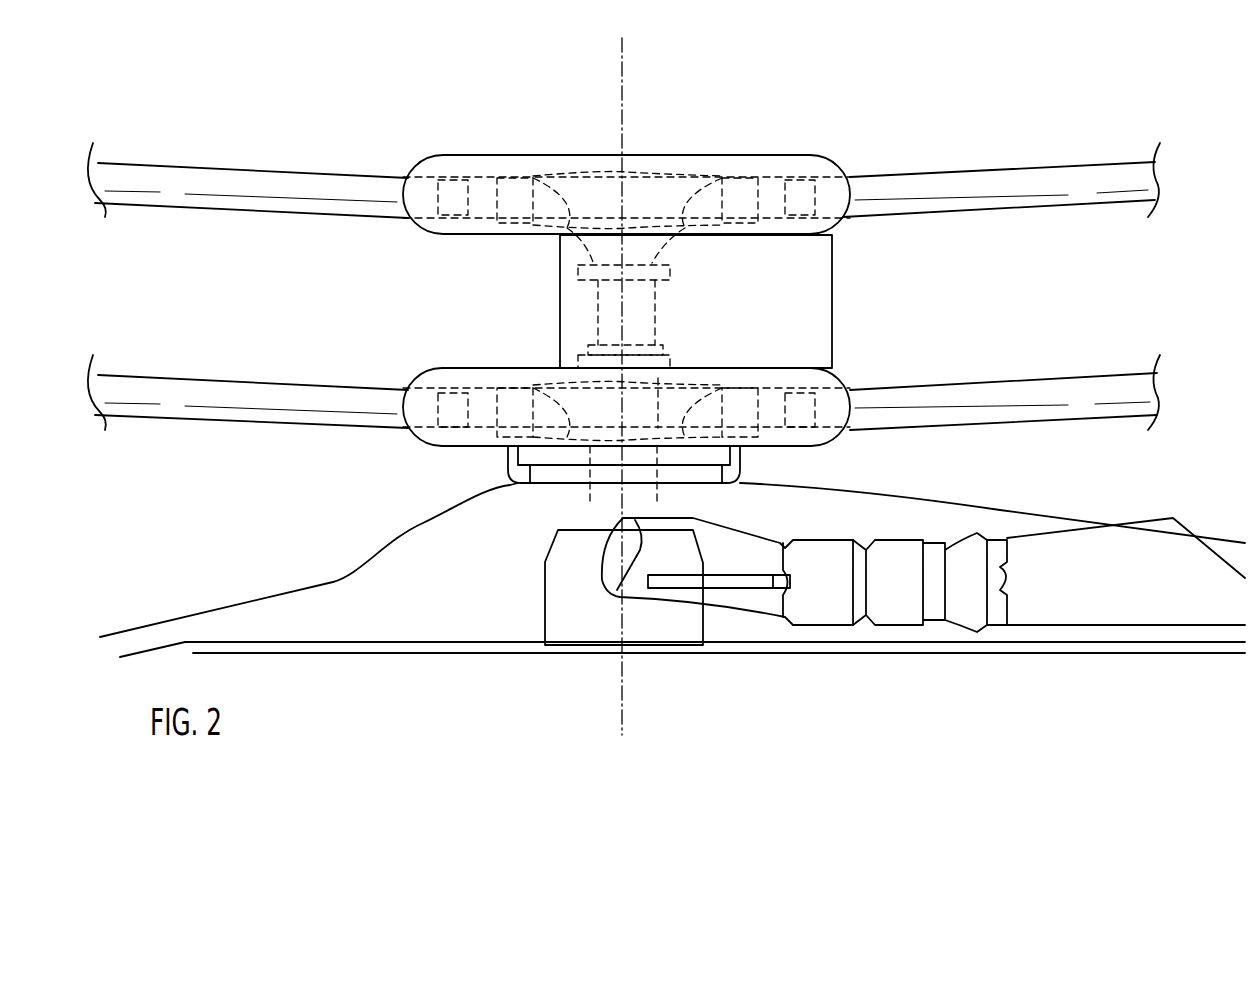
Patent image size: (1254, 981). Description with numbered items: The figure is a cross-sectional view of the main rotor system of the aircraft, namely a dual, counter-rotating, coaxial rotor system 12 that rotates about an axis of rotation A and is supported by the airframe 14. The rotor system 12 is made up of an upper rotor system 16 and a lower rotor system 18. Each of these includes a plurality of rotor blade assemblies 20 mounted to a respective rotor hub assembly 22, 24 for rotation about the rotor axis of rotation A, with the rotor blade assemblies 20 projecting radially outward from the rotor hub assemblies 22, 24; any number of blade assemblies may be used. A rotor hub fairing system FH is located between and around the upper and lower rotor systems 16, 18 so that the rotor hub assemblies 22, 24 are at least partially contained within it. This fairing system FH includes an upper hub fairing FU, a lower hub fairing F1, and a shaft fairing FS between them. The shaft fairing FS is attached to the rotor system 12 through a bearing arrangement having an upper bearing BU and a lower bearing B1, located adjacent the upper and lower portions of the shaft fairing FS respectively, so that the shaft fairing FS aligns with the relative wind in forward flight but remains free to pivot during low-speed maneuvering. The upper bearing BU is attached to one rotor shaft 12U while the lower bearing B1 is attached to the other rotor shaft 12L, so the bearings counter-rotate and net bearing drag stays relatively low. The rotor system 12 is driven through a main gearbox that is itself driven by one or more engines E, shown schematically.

The dual, counter-rotating, coaxial rotor system 12 is at (412, 468).
The rotor shaft 12U is at (571, 301).
The rotor shaft 12L is at (534, 340).
The airframe 14 is at (387, 642).
The upper rotor system 16 is at (855, 150).
The lower rotor system 18 is at (853, 366).
The rotor blade assemblies 20 is at (630, 255).
The rotor hub assembly 22 is at (660, 155).
The rotor hub assembly 24 is at (658, 430).
The axis of rotation A is at (622, 70).
The engines E is at (827, 597).
The upper hub fairing FU is at (510, 146).
The rotor hub fairing system FH is at (370, 268).
The lower hub fairing F1 is at (449, 365).
The shaft fairing FS is at (689, 307).
The upper bearing BU is at (631, 301).
The lower bearing B1 is at (614, 340).